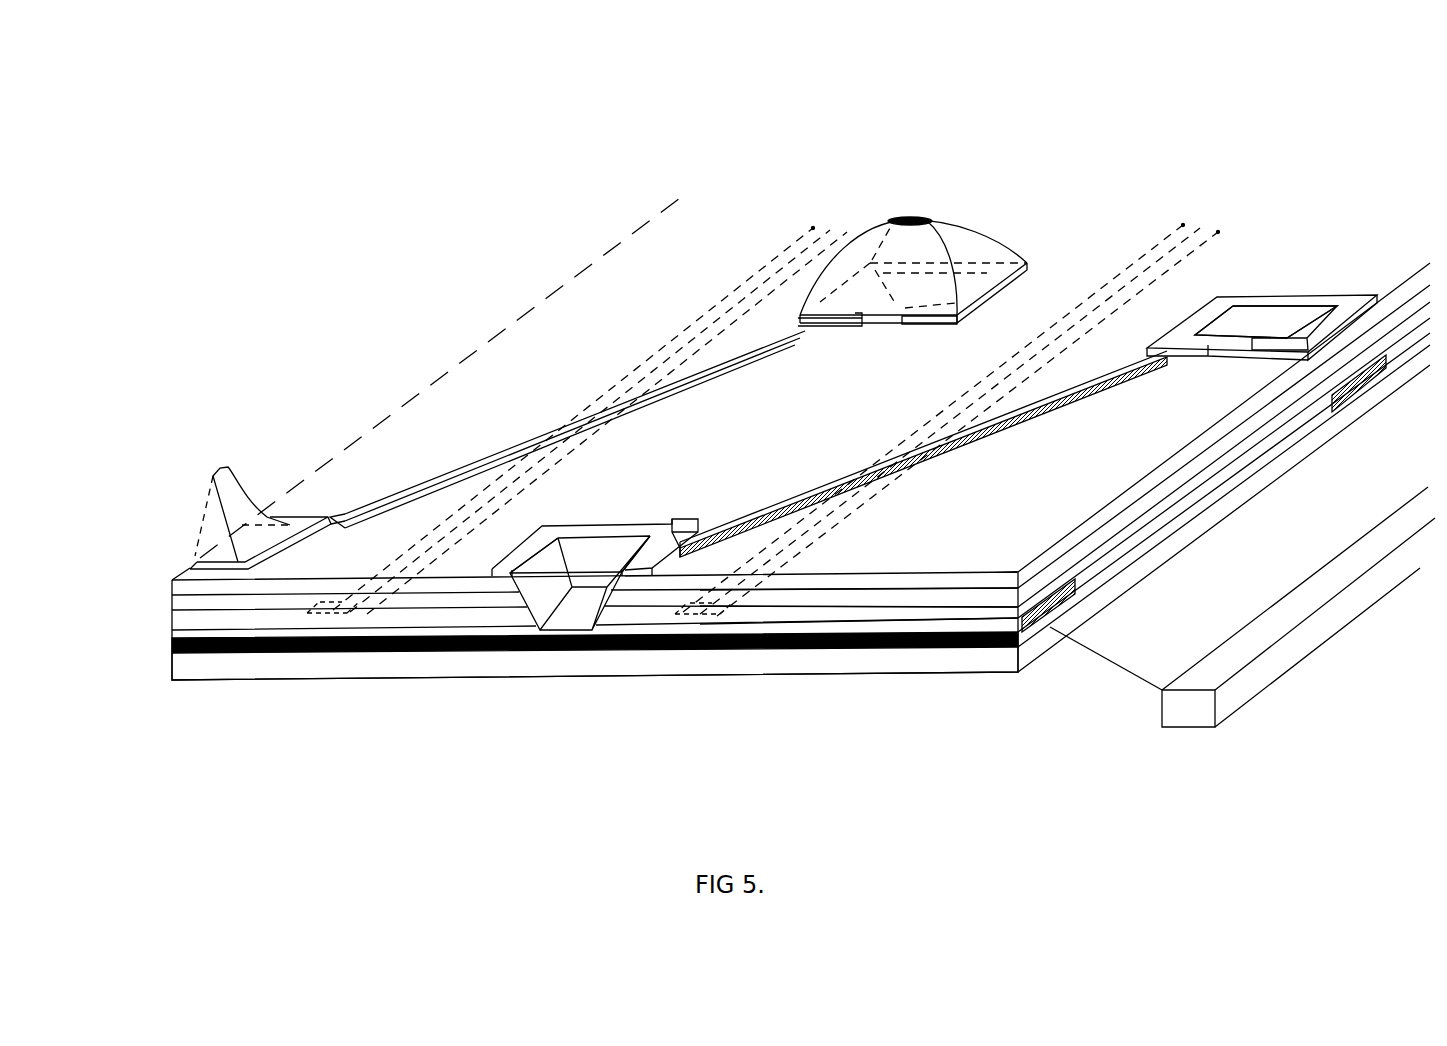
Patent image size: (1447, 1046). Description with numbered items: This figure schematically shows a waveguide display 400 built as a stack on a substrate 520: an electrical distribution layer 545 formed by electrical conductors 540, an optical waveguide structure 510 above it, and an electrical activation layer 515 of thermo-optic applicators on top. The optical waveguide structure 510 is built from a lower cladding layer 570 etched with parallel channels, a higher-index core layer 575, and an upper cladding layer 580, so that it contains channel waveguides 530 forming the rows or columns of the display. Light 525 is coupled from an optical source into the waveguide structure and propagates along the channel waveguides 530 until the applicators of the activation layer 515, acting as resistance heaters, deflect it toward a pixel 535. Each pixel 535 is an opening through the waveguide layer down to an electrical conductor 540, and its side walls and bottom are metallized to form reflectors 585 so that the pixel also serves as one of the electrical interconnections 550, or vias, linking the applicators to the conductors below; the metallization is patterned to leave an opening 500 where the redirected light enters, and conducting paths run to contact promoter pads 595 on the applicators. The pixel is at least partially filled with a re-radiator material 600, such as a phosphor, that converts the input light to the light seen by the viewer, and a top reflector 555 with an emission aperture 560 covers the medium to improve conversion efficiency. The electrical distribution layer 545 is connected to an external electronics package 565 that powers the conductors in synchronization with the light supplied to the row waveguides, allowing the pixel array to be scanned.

The waveguide display 400 is at (988, 738).
The opening 500 is at (1240, 312).
The optical waveguide structure 510 is at (160, 583).
The electrical activation layer 515 is at (943, 460).
The substrate 520 is at (197, 665).
The light 525 is at (650, 647).
The channel waveguides 530 is at (1147, 252).
The pixel 535 is at (1213, 300).
The electrical conductors 540 is at (1355, 392).
The electrical distribution layer 545 is at (988, 642).
The electrical interconnections 550 is at (1287, 307).
The top reflector 555 is at (1008, 248).
The emission aperture 560 is at (927, 218).
The external electronics package 565 is at (1287, 658).
The lower cladding layer 570 is at (930, 615).
The core layer 575 is at (900, 598).
The upper cladding layer 580 is at (857, 582).
The reflectors 585 is at (537, 600).
The contact promoter pads 595 is at (692, 608).
The re-radiator material 600 is at (240, 492).